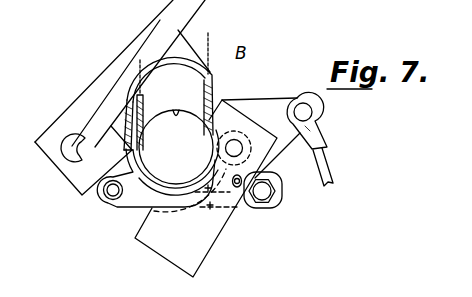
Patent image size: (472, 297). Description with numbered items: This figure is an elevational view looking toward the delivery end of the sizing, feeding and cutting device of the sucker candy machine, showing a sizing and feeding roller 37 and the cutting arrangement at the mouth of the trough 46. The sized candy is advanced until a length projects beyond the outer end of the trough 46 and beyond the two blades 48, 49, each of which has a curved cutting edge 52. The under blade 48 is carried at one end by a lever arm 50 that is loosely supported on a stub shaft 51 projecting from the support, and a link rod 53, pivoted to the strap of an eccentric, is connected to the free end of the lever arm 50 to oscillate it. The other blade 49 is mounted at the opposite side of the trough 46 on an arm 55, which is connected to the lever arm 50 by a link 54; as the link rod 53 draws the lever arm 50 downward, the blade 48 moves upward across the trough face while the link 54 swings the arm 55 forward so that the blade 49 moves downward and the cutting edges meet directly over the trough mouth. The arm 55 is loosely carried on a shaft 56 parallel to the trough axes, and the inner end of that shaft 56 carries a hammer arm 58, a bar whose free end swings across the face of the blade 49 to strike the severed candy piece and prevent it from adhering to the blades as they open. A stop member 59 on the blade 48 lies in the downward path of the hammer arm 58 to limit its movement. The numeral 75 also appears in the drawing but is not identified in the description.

The sizing and feeding roller 37 is at (198, 91).
The trough 46 is at (158, 183).
The blade 48 is at (217, 235).
The blade 49 is at (90, 89).
The lever arm 50 is at (265, 100).
The stub shaft 51 is at (238, 149).
The curved cutting edge 52 is at (128, 106).
The link rod 53 is at (329, 163).
The link 54 is at (251, 201).
The arm 55 is at (94, 192).
The shaft 56 is at (66, 158).
The hammer arm 58 is at (168, 11).
The stop member 59 is at (235, 190).
The support member 75 is at (275, 6).